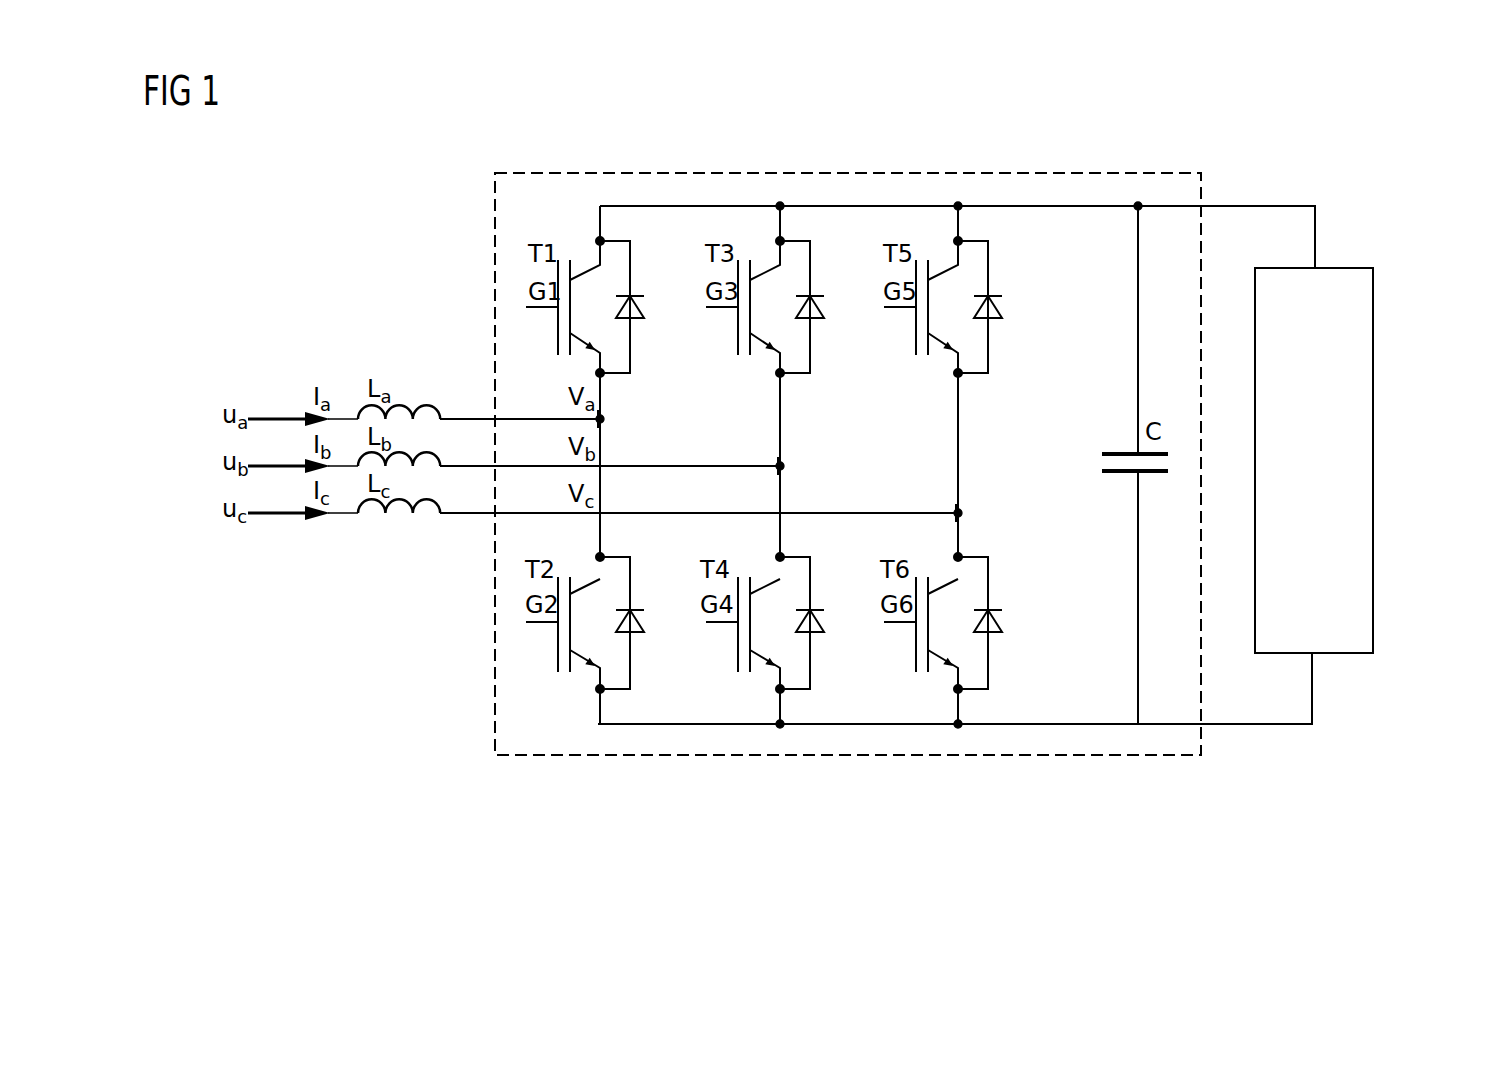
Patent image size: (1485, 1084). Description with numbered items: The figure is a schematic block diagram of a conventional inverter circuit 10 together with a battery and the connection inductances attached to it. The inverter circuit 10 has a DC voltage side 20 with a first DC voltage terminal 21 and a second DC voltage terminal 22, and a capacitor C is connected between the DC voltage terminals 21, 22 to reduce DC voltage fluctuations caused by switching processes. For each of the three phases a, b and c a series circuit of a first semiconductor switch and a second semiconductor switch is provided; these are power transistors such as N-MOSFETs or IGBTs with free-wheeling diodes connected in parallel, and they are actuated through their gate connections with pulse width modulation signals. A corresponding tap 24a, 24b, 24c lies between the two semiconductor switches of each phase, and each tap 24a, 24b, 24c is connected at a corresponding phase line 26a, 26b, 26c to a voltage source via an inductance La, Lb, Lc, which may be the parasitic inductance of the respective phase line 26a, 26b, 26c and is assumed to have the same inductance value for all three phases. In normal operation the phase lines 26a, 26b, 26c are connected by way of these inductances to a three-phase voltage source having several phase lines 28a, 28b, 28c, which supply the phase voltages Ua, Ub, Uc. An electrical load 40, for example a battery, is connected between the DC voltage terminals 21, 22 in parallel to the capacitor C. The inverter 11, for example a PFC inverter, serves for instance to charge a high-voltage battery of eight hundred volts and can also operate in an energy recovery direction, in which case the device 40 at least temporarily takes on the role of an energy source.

The inverter circuit 10 is at (493, 692).
The inverter 11 is at (400, 285).
The DC voltage side 20 is at (1338, 255).
The first DC voltage terminal 21 is at (1256, 206).
The second DC voltage terminal 22 is at (1265, 724).
The tap 24a is at (605, 419).
The tap 24b is at (784, 466).
The tap 24c is at (962, 513).
The phase line 26a is at (518, 416).
The phase line 26b is at (470, 464).
The phase line 26c is at (470, 518).
The phase line of three-phase voltage source 28a is at (266, 414).
The phase line of three-phase voltage source 28b is at (278, 470).
The phase line of three-phase voltage source 28c is at (334, 518).
The electrical load 40 is at (1373, 455).